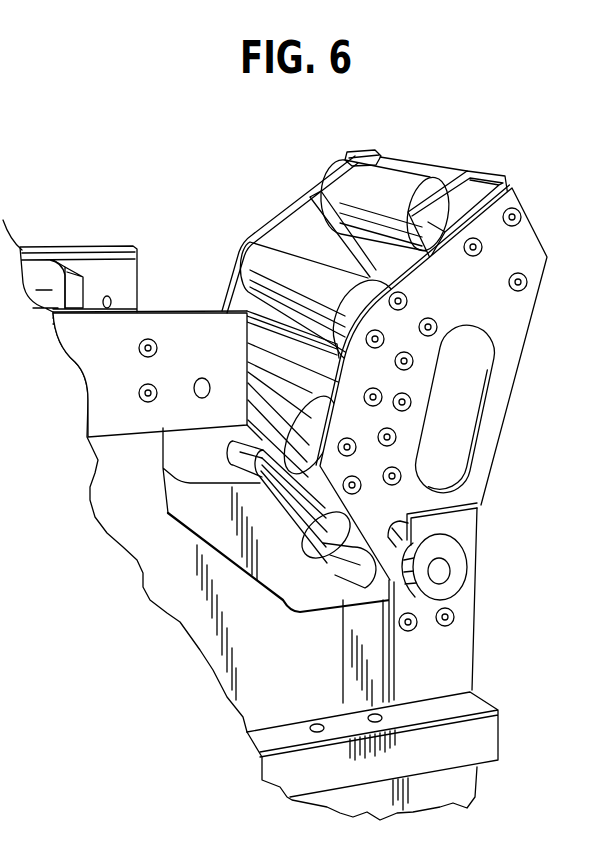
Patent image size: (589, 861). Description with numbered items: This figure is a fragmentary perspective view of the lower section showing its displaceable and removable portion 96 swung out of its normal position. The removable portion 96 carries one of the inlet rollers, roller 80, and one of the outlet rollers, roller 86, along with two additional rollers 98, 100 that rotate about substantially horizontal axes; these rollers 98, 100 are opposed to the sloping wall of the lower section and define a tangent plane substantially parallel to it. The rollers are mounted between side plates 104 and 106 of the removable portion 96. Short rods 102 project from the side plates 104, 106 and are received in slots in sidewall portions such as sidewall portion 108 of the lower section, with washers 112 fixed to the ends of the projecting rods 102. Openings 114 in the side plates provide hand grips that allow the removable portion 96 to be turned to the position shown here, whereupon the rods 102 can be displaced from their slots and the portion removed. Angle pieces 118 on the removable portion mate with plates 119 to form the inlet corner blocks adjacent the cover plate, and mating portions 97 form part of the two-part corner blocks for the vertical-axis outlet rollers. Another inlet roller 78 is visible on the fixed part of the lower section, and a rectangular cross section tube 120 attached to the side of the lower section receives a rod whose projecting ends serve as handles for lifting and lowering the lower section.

The roller 78 is at (35, 270).
The plates 119 is at (77, 280).
The roller 100 is at (247, 367).
The roller 98 is at (303, 258).
The side plate 106 is at (292, 198).
The angle pieces 118 is at (357, 148).
The roller 80 is at (400, 177).
The side plate 104 is at (517, 315).
The openings 114 is at (478, 360).
The removable portion 96 is at (528, 442).
The washers 112 is at (463, 555).
The short rods 102 is at (450, 574).
The sidewall portion 108 is at (450, 661).
The rectangular cross section tubes 120 is at (480, 745).
The mating portions 97 is at (237, 453).
The roller 86 is at (280, 513).